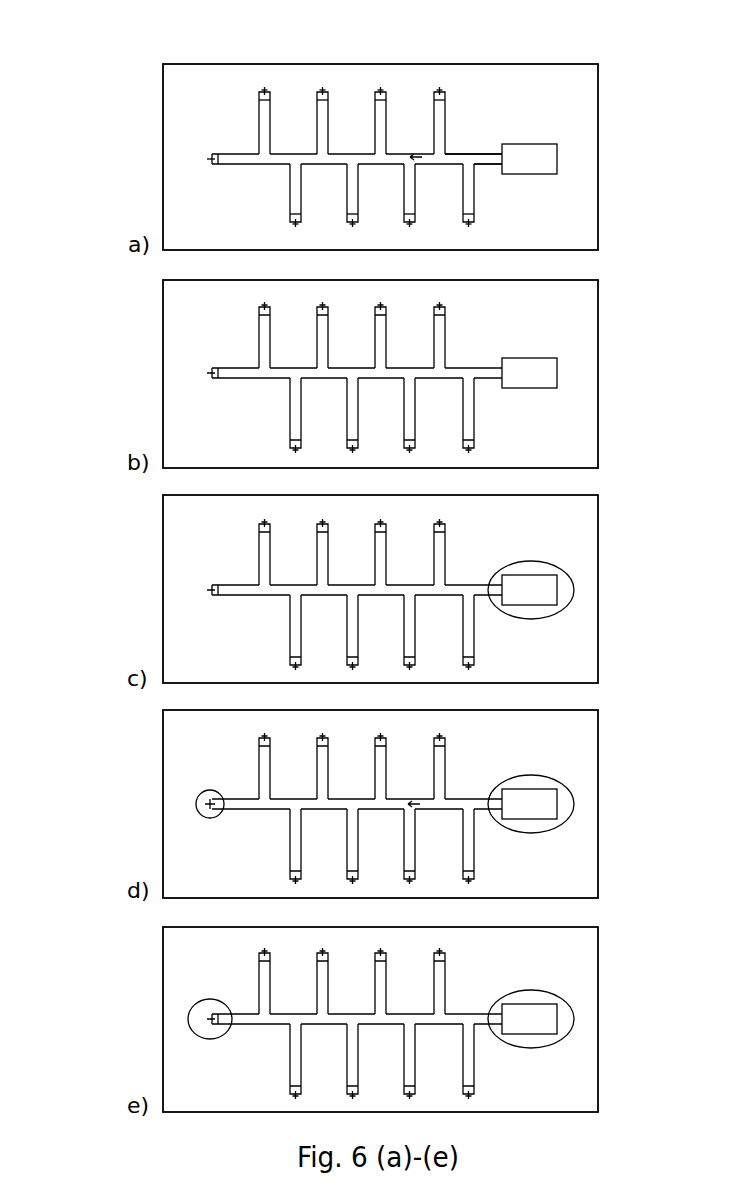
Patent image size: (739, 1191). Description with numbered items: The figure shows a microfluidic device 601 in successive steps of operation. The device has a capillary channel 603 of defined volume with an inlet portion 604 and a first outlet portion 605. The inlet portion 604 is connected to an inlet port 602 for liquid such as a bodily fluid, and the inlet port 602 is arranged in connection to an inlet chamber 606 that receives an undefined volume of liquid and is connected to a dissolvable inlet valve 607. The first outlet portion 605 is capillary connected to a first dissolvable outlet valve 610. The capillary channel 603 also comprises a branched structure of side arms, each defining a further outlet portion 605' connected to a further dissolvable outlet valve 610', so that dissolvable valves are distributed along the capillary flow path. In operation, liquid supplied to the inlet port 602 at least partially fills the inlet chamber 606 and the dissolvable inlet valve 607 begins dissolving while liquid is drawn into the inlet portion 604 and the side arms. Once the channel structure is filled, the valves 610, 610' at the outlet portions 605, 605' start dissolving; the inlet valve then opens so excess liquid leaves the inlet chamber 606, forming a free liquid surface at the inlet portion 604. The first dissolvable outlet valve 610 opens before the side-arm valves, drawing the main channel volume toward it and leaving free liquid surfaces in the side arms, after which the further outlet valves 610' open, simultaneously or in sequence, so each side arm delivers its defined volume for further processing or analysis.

The microfluidic device 601 is at (128, 45).
The inlet port 602 is at (562, 152).
The capillary channel 603 is at (445, 157).
The inlet portion 604 is at (477, 158).
The first outlet portion 605 is at (324, 84).
The further outlet portion 605' is at (401, 79).
The inlet chamber 606 is at (547, 160).
The dissolvable inlet valve 607 is at (530, 155).
The first dissolvable outlet valve 610 is at (132, 126).
The further dissolvable outlet valve 610' is at (444, 52).